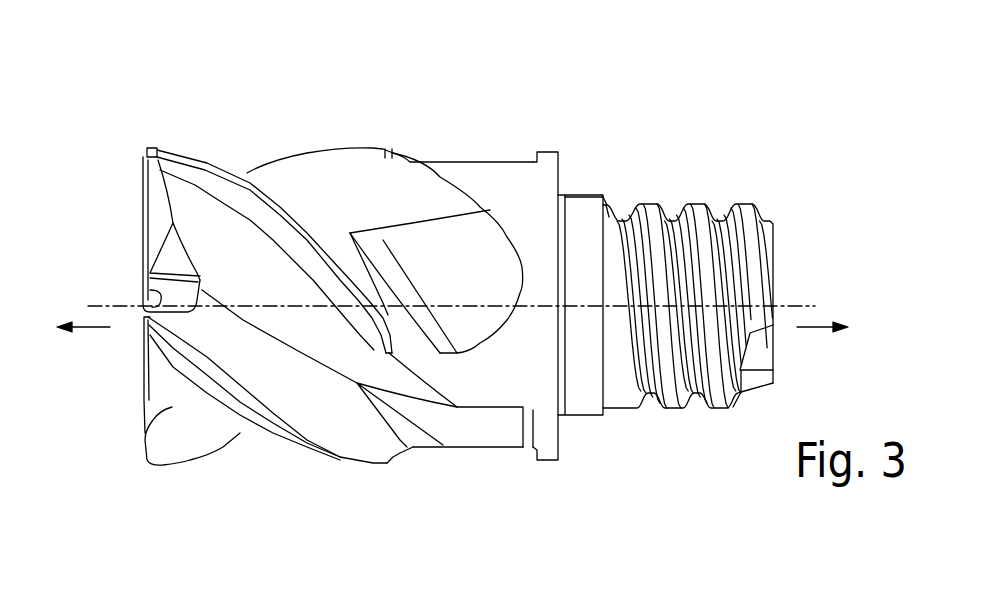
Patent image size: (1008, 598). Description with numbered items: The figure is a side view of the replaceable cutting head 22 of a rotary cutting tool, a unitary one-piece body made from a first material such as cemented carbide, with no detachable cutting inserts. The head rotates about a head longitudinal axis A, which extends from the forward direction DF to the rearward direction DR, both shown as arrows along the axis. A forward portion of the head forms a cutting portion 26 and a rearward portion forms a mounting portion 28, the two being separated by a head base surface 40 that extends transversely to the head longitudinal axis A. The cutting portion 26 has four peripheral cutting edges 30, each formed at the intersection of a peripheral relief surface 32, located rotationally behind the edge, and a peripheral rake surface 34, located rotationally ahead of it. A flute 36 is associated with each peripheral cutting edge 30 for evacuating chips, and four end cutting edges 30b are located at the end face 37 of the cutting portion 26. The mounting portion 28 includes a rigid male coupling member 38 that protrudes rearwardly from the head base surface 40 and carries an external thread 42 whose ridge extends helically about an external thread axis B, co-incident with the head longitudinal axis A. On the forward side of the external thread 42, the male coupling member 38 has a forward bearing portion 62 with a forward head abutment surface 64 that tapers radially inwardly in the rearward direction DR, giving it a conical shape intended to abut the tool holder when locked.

The replaceable cutting head 22 is at (714, 99).
The cutting portion 26 is at (263, 75).
The mounting portion 28 is at (774, 171).
The peripheral cutting edge 30 is at (211, 162).
The end cutting edge 30b is at (145, 180).
The peripheral relief surface 32 is at (250, 188).
The peripheral rake surface 34 is at (206, 362).
The flute 36 is at (290, 295).
The end face 37 is at (101, 218).
The male coupling member 38 is at (686, 449).
The head base surface 40 is at (560, 163).
The external thread 42 is at (671, 392).
The forward bearing portion 62 is at (581, 436).
The forward head abutment surface 64 is at (581, 193).
The head longitudinal axis A is at (114, 305).
The external thread axis B is at (791, 306).
The forward direction DF is at (83, 344).
The rearward direction DR is at (821, 343).